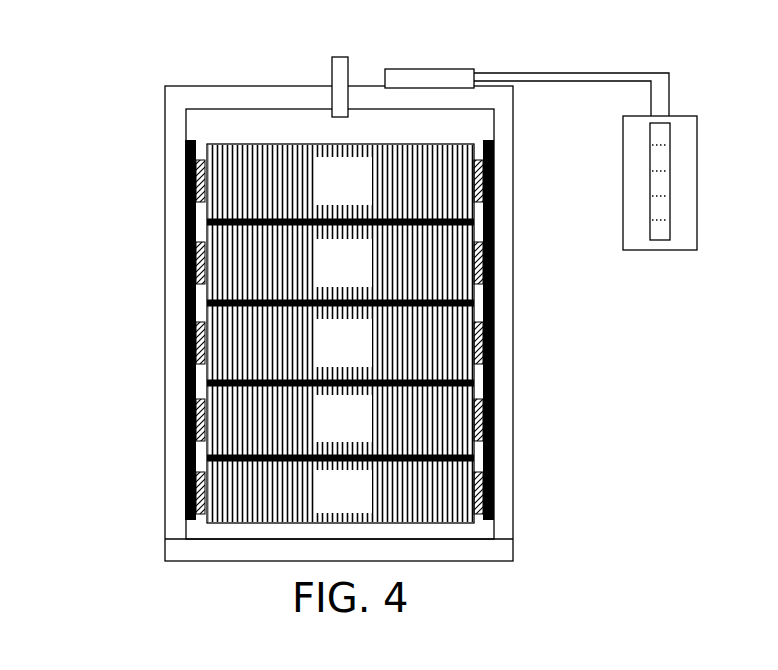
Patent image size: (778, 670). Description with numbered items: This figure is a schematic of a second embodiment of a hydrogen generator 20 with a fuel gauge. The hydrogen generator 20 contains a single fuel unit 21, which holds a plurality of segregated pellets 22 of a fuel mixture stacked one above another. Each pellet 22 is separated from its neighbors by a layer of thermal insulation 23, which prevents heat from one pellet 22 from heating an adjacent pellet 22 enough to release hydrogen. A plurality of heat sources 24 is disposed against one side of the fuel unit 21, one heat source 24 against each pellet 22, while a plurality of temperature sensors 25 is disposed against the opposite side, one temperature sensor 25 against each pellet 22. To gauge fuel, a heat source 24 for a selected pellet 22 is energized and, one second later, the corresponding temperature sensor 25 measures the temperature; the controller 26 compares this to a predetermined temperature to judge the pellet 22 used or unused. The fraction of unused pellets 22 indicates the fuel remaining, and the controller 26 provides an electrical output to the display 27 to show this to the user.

The hydrogen generator 20 is at (142, 62).
The fuel unit 21 is at (237, 147).
The pellets 22 is at (355, 194).
The layer of thermal insulation 23 is at (203, 298).
The heat sources 24 is at (185, 266).
The temperature sensors 25 is at (494, 340).
The controller 26 is at (438, 69).
The display 27 is at (678, 116).